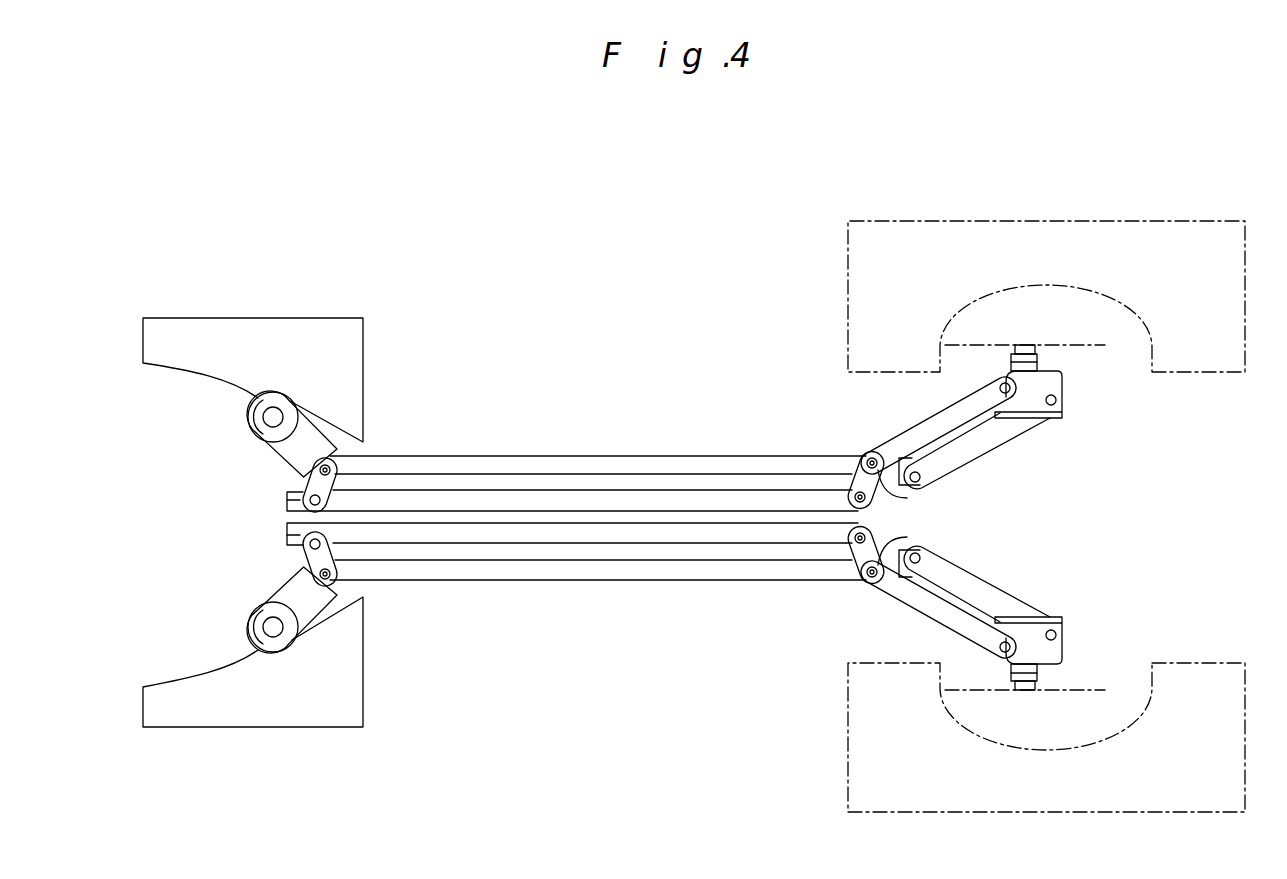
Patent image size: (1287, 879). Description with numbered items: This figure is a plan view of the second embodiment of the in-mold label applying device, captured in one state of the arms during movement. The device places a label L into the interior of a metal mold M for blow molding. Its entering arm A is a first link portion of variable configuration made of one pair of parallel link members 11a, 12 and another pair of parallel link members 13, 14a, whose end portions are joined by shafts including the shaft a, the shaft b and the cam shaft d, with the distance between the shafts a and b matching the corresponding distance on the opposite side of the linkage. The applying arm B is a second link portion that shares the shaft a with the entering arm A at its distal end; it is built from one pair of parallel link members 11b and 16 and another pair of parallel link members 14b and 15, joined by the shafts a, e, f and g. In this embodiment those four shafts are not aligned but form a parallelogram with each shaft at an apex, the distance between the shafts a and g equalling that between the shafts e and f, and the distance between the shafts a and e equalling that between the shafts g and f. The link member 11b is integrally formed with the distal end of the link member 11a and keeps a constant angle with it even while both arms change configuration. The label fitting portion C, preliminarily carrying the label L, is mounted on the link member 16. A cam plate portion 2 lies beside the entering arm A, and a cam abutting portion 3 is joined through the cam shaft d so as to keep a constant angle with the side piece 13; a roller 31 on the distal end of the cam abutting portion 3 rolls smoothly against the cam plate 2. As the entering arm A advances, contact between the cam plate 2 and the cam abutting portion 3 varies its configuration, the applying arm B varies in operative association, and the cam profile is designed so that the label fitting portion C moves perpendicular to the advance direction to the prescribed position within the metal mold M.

The cam plate portion 2 is at (265, 335).
The cam abutting portion 3 is at (282, 446).
The roller 31 is at (249, 406).
The link member 13 is at (303, 480).
The link member 11a is at (478, 466).
The link member 11b is at (905, 514).
The link member 12 is at (540, 500).
The link member 14a is at (858, 470).
The link member 14b is at (940, 422).
The link member 15 is at (1000, 437).
The link member 16 is at (1033, 390).
The shaft a is at (862, 450).
The shaft b is at (854, 500).
The cam shaft d is at (327, 466).
The shaft e is at (998, 385).
The shaft f is at (1063, 414).
The shaft g is at (930, 477).
The label fitting portion C is at (293, 540).
The label L is at (1080, 342).
The metal mold M is at (1097, 229).
The entering arm A is at (632, 442).
The applying arm B is at (935, 388).